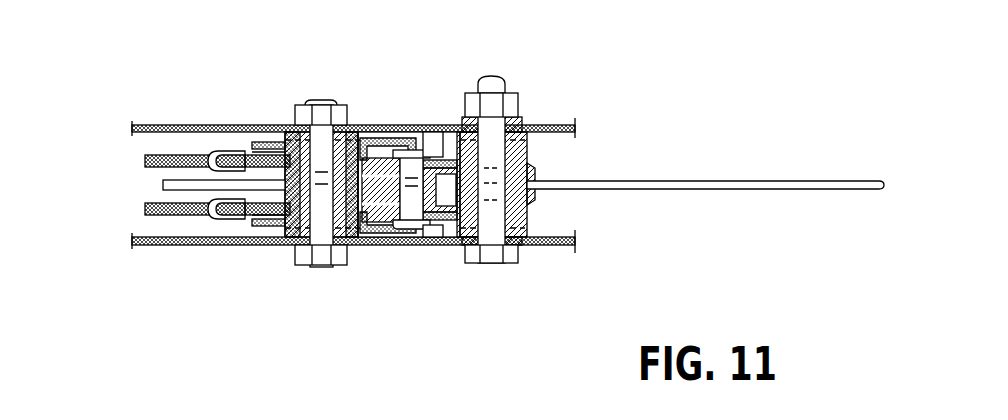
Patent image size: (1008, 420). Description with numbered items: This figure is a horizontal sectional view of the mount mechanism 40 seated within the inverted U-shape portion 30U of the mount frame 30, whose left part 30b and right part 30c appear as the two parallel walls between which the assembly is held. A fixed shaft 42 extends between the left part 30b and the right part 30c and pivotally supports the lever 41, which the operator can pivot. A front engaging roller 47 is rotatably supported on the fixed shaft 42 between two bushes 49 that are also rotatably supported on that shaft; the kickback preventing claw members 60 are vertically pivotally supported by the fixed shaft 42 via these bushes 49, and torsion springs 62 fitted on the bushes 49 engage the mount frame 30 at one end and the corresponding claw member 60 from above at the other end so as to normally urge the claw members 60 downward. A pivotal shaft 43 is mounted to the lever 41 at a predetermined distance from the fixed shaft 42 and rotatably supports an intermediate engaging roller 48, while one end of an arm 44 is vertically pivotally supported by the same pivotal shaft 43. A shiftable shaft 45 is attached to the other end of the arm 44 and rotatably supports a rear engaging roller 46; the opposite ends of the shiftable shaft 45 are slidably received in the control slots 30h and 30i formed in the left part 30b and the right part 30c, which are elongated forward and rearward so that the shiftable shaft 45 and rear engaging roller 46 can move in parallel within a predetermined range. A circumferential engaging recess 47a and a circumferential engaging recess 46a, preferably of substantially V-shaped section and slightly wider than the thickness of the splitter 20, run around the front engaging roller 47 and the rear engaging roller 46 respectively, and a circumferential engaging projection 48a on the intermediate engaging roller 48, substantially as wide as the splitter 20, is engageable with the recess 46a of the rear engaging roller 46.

The splitter 20 is at (835, 189).
The mount frame 30 is at (457, 202).
The inverted U-shape portion 30U is at (236, 125).
The left part 30b is at (160, 247).
The right part 30c is at (151, 125).
The control slot 30h is at (437, 240).
The control slot 30i is at (432, 125).
The mount mechanism 40 is at (413, 258).
The lever 41 is at (372, 125).
The fixed shaft 42 is at (320, 265).
The pivotal shaft 43 is at (407, 125).
The arm 44 is at (446, 125).
The shiftable shaft 45 is at (492, 235).
The rear engaging roller 46 is at (527, 172).
The circumferential engaging recess 46a is at (557, 189).
The front engaging roller 47 is at (238, 240).
The circumferential engaging recess 47a is at (362, 240).
The intermediate engaging roller 48 is at (450, 240).
The circumferential engaging projection 48a is at (382, 240).
The bush 49 is at (358, 125).
The kickback preventing claw member 60 is at (148, 160).
The torsion spring 62 is at (200, 127).